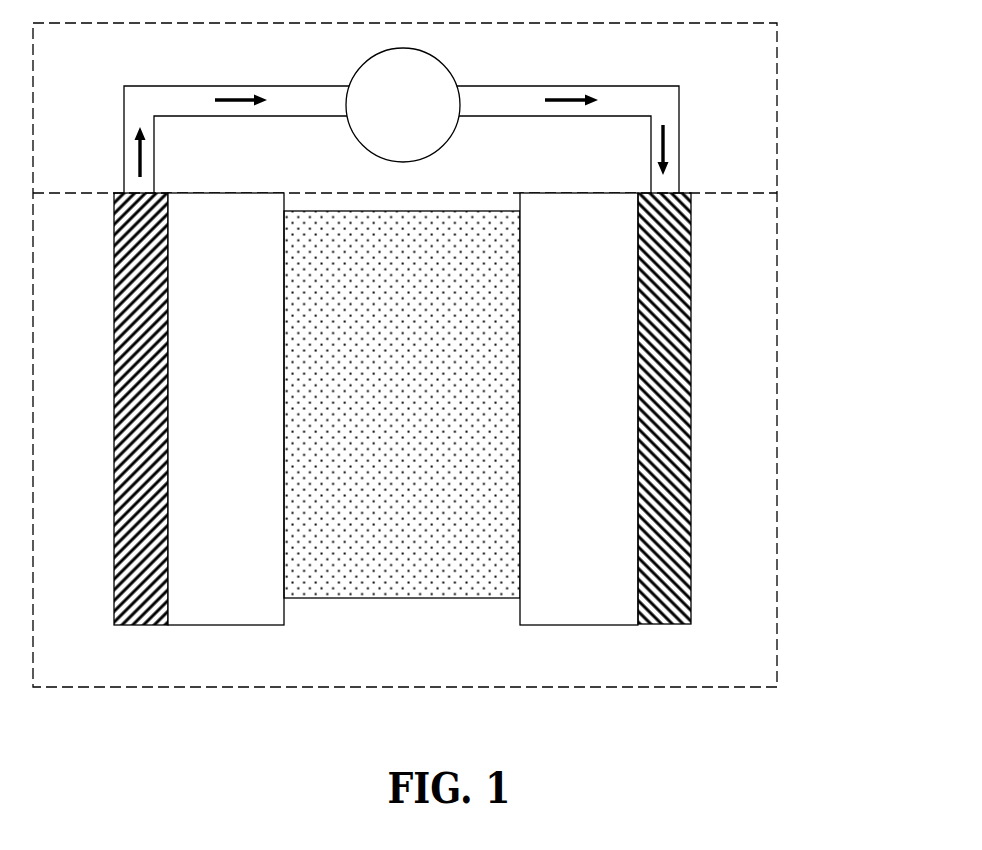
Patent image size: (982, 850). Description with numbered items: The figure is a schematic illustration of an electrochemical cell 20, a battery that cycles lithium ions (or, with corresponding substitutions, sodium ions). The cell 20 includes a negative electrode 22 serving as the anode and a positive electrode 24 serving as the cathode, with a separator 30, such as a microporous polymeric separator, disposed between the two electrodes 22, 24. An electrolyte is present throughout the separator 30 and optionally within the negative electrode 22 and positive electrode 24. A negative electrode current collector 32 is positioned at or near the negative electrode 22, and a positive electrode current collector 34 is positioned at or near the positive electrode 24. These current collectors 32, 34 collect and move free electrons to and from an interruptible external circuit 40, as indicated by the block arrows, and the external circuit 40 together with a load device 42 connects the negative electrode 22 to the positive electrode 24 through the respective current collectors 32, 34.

The electrochemical cell 20 is at (788, 276).
The negative electrode 22 is at (214, 366).
The positive electrode 24 is at (567, 366).
The separator 30 is at (390, 366).
The negative electrode current collector 32 is at (114, 413).
The positive electrode current collector 34 is at (691, 415).
The external circuit 40 is at (785, 150).
The load device 42 is at (391, 115).